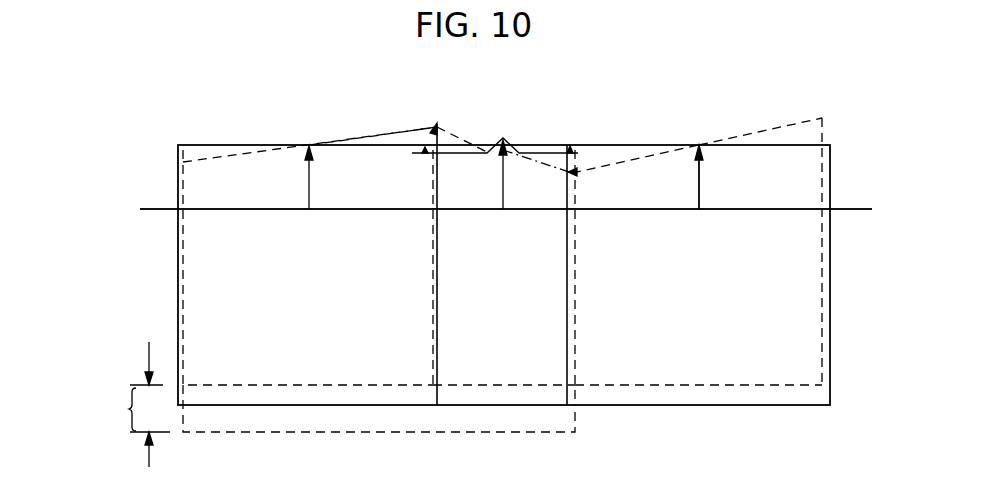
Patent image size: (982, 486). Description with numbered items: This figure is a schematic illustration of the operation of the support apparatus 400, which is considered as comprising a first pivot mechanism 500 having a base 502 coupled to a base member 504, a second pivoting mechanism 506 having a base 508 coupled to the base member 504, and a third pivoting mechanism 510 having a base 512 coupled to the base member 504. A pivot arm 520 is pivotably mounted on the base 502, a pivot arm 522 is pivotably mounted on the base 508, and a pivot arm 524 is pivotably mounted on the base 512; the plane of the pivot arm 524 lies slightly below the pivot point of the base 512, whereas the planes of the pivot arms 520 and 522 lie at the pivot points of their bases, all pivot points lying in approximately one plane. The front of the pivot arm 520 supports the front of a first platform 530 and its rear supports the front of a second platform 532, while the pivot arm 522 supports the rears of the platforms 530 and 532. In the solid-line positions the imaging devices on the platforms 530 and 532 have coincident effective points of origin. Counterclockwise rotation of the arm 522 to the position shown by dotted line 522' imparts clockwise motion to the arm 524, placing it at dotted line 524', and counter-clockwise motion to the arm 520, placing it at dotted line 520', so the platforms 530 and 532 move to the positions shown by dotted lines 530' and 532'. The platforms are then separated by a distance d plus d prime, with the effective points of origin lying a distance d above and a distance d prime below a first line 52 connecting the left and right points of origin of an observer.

The first pivot mechanism 500 is at (332, 117).
The support apparatus 400 is at (882, 197).
The base member 504 is at (832, 210).
The base 502 is at (310, 178).
The second pivoting mechanism 506 is at (732, 111).
The base 508 is at (699, 170).
The third pivoting mechanism 510 is at (527, 152).
The base 512 is at (507, 194).
The pivot arm 520 is at (310, 135).
The dotted line 520' is at (373, 116).
The pivot arm 522 is at (760, 110).
The dotted line 522' is at (633, 252).
The pivot arm 524 is at (458, 245).
The dotted line 524' is at (537, 176).
The first platform 530 is at (308, 277).
The dotted line 530' is at (379, 424).
The second platform 532 is at (504, 277).
The dotted line 532' is at (698, 251).
The first line 52 is at (120, 409).